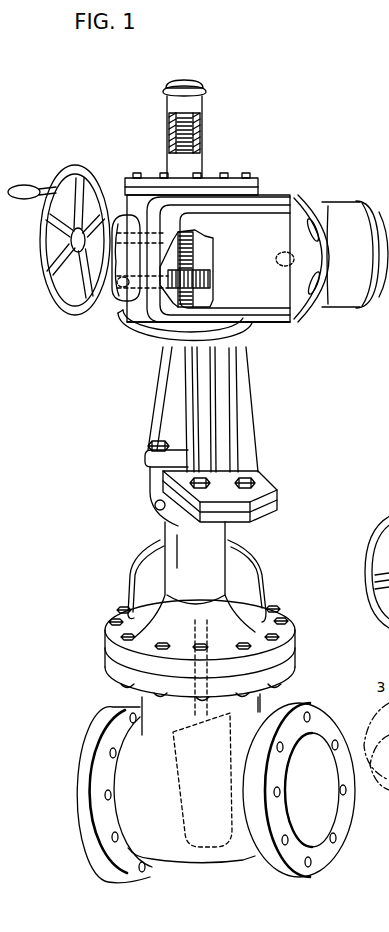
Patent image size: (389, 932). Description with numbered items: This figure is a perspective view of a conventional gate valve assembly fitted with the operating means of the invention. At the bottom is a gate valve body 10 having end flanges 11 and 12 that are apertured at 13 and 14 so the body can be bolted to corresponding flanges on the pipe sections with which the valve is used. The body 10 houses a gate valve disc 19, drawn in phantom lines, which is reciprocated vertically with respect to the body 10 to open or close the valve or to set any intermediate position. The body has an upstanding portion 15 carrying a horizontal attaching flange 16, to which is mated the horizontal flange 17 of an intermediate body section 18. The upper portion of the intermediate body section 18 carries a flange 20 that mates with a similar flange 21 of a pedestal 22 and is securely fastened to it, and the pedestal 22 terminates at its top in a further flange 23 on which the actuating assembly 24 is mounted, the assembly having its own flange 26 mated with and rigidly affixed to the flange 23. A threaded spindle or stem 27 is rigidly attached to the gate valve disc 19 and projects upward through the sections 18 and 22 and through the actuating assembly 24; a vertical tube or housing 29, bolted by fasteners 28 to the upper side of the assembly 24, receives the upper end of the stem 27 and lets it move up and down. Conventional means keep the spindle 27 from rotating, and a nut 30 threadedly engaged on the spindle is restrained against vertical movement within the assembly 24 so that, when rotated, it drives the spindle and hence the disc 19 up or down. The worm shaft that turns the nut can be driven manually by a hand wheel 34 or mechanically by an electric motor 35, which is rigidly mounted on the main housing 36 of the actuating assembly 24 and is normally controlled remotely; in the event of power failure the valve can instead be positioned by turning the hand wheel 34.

The gate valve body 10 is at (193, 867).
The end flange 11 is at (118, 867).
The end flange 12 is at (303, 869).
The apertures 13 is at (113, 836).
The apertures 14 is at (311, 862).
The upstanding portion 15 is at (263, 705).
The horizontal attaching flange 16 is at (113, 672).
The horizontal flange 17 is at (288, 646).
The intermediate body section 18 is at (277, 554).
The gate valve disc 19 is at (233, 848).
The flange 20 is at (278, 505).
The flange 21 is at (275, 487).
The pedestal 22 is at (263, 411).
The flange 23 is at (147, 340).
The actuating assembly 24 is at (283, 191).
The flange 26 is at (118, 316).
The threaded spindle or stem 27 is at (196, 249).
The fasteners 28 is at (136, 172).
The vertical tube or housing 29 is at (197, 128).
The nut 30 is at (211, 270).
The hand wheel 34 is at (60, 305).
The electric motor 35 is at (345, 304).
The main housing 36 is at (278, 324).